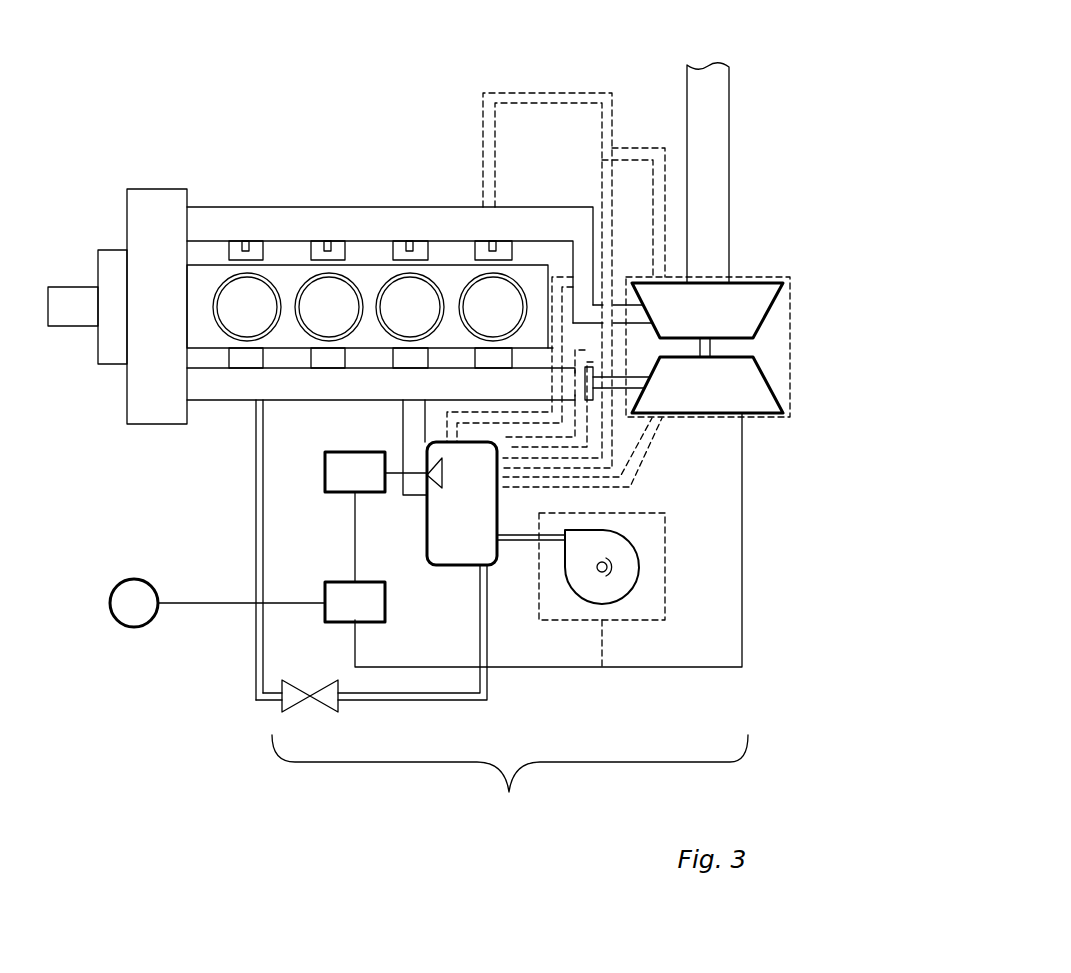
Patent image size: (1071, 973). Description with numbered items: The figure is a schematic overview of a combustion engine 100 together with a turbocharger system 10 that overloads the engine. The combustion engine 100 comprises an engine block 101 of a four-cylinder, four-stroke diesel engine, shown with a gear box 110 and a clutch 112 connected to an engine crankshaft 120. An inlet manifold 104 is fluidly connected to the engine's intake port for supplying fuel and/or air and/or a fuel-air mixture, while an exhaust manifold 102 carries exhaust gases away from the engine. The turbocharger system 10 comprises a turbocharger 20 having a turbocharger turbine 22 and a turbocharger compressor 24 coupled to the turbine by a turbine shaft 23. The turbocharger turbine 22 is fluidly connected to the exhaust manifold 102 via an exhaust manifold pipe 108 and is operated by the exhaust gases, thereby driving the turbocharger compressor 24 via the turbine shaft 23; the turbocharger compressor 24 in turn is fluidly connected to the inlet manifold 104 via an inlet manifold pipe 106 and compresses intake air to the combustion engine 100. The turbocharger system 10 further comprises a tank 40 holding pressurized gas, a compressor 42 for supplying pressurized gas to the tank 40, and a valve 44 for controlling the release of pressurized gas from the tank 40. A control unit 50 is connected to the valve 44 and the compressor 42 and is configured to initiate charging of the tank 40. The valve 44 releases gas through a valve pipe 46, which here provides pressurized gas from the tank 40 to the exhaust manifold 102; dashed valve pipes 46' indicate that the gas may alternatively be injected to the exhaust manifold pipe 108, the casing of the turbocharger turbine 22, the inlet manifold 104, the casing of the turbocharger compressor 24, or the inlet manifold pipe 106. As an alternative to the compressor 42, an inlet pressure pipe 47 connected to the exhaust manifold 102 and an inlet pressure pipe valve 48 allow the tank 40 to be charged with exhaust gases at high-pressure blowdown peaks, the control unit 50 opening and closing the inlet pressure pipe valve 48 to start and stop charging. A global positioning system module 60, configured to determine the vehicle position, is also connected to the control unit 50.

The turbocharger system 10 is at (510, 783).
The turbocharger 20 is at (772, 435).
The turbocharger turbine 22 is at (783, 412).
The turbine shaft 23 is at (712, 348).
The turbocharger compressor 24 is at (783, 284).
The tank 40 is at (447, 532).
The compressor 42 is at (639, 571).
The valve 44 is at (437, 478).
The valve pipe 46 is at (341, 550).
The dashed valve pipes 46' is at (611, 359).
The inlet pressure pipe 47 is at (487, 683).
The inlet pressure pipe valve 48 is at (325, 712).
The control unit 50 is at (385, 601).
The global positioning system module 60 is at (133, 579).
The combustion engine 100 is at (240, 145).
The engine block 101 is at (281, 278).
The exhaust manifold 102 is at (390, 396).
The inlet manifold 104 is at (390, 238).
The inlet manifold pipe 106 is at (583, 255).
The exhaust manifold pipe 108 is at (618, 390).
The gear box 110 is at (115, 250).
The clutch 112 is at (168, 188).
The engine crankshaft 120 is at (83, 328).